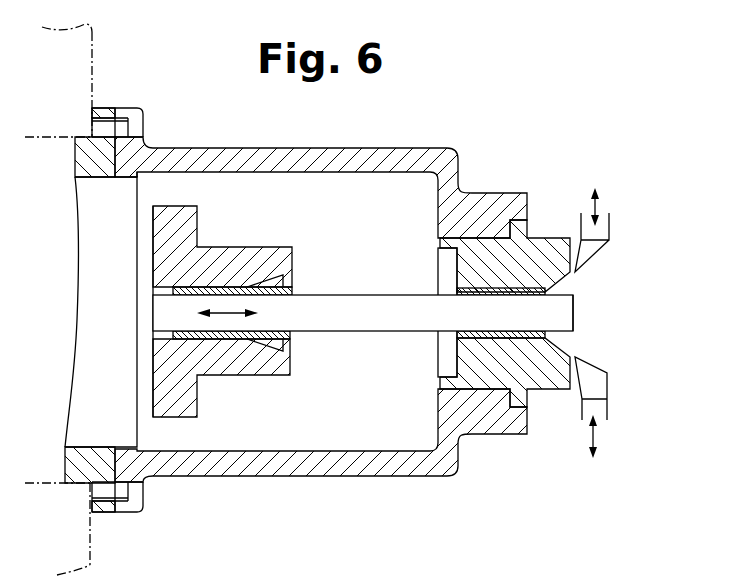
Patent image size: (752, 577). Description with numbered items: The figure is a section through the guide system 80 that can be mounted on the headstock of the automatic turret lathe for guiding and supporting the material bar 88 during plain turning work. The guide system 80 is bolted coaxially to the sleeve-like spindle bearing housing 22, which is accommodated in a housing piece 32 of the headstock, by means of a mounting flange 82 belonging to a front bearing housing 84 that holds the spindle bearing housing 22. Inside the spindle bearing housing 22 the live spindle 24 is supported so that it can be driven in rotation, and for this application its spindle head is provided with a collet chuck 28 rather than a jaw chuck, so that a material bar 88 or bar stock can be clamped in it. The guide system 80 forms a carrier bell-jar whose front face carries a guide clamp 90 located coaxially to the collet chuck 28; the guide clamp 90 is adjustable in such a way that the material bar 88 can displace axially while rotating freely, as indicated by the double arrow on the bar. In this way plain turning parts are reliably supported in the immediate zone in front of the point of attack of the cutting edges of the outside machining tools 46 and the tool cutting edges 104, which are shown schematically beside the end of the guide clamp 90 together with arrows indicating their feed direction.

The spindle bearing housing 22 is at (150, 193).
The live spindle 24 is at (143, 405).
The collet chuck 28 is at (302, 285).
The housing piece 32 is at (75, 537).
The outside machining tools 46 is at (596, 252).
The guide system 80 is at (385, 143).
The mounting flange 82 is at (100, 107).
The front bearing housing 84 is at (82, 140).
The material bar 88 is at (356, 322).
The guide clamp 90 is at (585, 341).
The tool cutting edges 104 is at (598, 383).